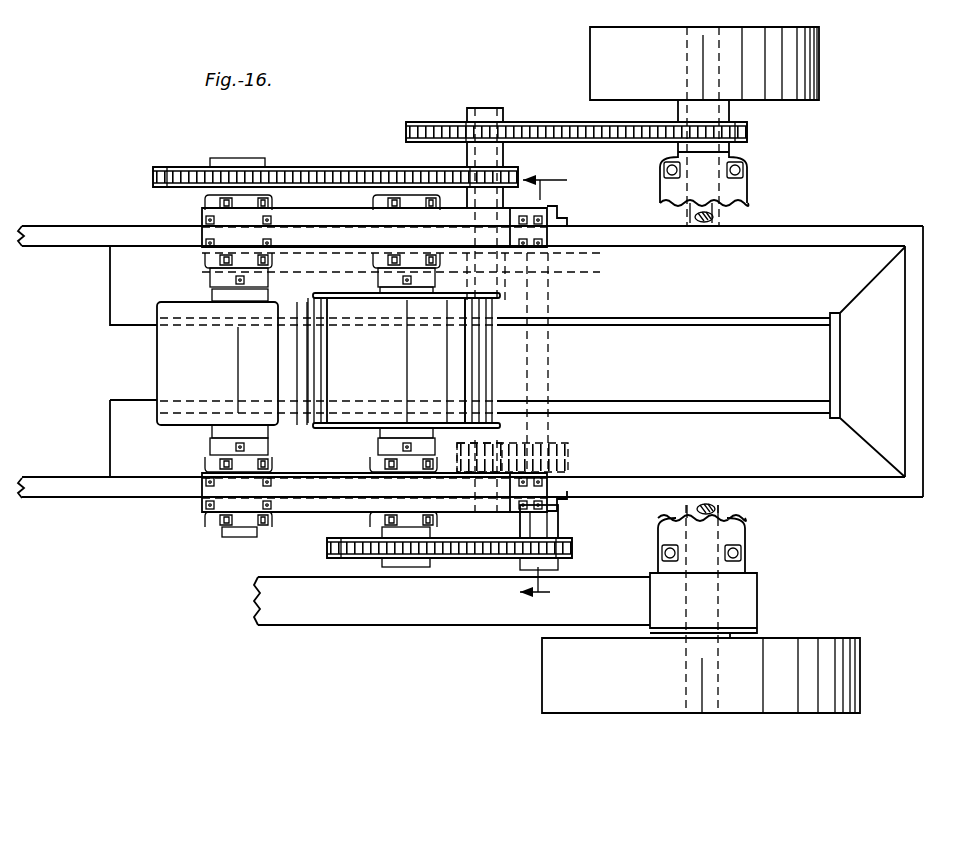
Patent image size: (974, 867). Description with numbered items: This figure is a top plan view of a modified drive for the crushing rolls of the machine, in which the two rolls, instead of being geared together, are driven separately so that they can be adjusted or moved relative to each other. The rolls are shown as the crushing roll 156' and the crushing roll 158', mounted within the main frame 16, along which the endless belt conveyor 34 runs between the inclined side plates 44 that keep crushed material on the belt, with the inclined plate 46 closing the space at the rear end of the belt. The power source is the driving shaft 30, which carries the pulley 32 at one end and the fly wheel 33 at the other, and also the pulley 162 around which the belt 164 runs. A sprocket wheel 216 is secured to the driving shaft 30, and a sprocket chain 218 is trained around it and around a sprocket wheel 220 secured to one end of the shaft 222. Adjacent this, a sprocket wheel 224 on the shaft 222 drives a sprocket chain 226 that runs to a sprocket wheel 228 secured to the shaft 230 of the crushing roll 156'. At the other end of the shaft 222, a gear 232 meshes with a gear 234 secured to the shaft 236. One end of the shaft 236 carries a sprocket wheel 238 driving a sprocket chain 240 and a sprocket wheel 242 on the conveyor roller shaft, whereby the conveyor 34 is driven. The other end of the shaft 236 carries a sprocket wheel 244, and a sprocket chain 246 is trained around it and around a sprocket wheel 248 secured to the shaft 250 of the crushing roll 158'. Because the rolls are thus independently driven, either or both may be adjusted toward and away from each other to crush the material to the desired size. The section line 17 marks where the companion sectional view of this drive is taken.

The main frame 16 is at (618, 238).
The section line 17— 17 is at (557, 386).
The driving shaft 30 is at (718, 219).
The pulley 32 is at (560, 672).
The fly wheel 33 is at (596, 42).
The endless belt conveyor 34 is at (812, 373).
The inclined side plates 44 is at (822, 262).
The inclined plate 46 is at (896, 347).
The crushing roll 156' is at (297, 363).
The crushing roll 158' is at (463, 360).
The pulley 162 is at (755, 577).
The belt 164 is at (412, 622).
The sprocket wheel 216 is at (749, 128).
The sprocket chain 218 is at (547, 122).
The sprocket wheel 220 is at (427, 110).
The shaft 222 is at (487, 107).
The sprocket wheel 224 is at (518, 176).
The sprocket chain 226 is at (359, 157).
The sprocket wheel 228 is at (178, 167).
The shaft 230 is at (243, 158).
The gear 232 is at (500, 443).
The gear 234 is at (572, 459).
The shaft 236 is at (548, 388).
The sprocket wheel 238 is at (580, 271).
The sprocket chain 240 is at (330, 273).
The sprocket wheel 242 is at (210, 273).
The sprocket wheel 244 is at (573, 547).
The sprocket chain 246 is at (463, 556).
The sprocket wheel 248 is at (327, 549).
The shaft 250 is at (395, 441).